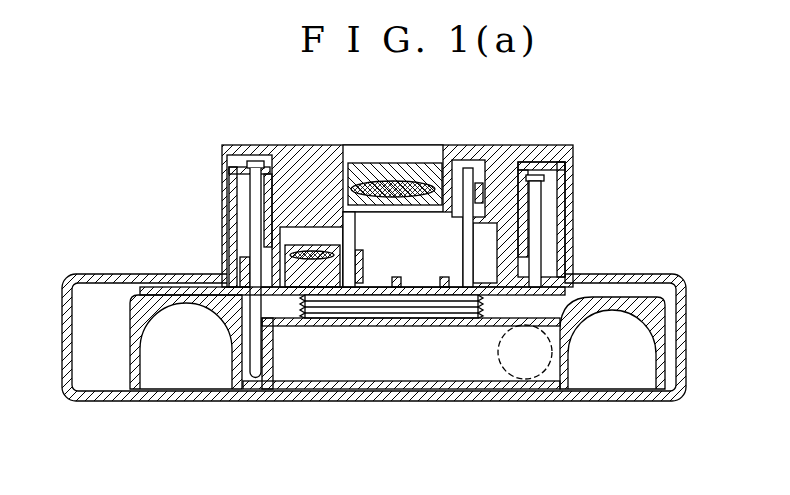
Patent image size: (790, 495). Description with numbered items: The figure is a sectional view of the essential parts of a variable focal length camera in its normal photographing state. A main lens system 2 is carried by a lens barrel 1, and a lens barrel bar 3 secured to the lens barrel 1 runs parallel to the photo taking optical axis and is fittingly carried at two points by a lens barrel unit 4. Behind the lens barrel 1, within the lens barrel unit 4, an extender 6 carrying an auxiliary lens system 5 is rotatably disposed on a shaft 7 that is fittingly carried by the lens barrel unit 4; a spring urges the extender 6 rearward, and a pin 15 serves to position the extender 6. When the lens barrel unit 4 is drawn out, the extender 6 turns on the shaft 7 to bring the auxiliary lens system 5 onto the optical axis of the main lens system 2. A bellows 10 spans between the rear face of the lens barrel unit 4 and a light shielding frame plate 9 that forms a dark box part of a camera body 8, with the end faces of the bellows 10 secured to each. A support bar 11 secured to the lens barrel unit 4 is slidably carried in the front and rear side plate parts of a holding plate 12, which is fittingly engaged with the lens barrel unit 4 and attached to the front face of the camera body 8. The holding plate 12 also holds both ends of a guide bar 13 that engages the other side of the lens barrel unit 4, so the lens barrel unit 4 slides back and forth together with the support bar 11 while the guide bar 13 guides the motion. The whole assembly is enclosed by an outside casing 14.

The lens barrel 1 is at (381, 164).
The main lens system 2 is at (396, 182).
The lens barrel bar 3 is at (466, 167).
The lens barrel unit 4 is at (270, 145).
The auxiliary lens system 5 is at (300, 292).
The extender 6 is at (301, 243).
The shaft 7 is at (352, 240).
The camera body 8 is at (666, 368).
The light shielding frame plate 9 is at (294, 332).
The bellows 10 is at (458, 300).
The support bar 11 is at (252, 198).
The holding plate 12 is at (230, 242).
The guide bar 13 is at (541, 211).
The outside casing 14 is at (686, 323).
The pin 15 is at (417, 292).